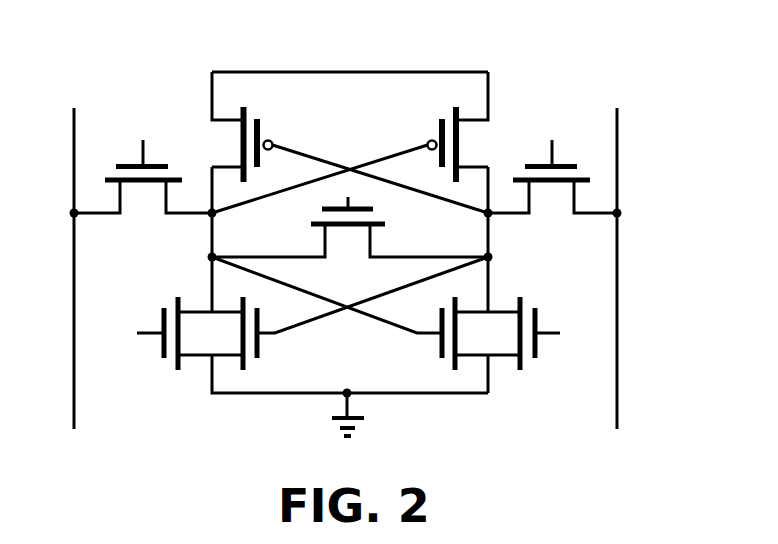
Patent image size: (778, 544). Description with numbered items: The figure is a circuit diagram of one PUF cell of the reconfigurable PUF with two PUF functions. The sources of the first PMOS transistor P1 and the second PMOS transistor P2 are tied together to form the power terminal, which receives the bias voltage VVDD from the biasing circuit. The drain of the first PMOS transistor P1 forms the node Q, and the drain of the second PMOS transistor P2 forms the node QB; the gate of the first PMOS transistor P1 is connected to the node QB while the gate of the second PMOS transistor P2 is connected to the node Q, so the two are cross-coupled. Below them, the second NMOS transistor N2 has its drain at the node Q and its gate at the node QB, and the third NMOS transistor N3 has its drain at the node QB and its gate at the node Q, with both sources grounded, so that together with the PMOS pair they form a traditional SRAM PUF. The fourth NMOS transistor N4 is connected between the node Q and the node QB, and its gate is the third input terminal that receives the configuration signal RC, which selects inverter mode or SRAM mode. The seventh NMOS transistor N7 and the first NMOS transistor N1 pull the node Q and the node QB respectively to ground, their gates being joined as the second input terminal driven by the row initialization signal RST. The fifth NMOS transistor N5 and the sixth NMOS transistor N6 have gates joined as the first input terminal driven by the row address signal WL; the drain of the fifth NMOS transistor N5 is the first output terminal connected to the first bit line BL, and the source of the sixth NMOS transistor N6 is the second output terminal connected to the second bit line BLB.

The bias voltage VVDD is at (350, 58).
The first bit line BL is at (73, 258).
The second bit line BLB is at (616, 258).
The row address signal WL is at (345, 143).
The fifth NMOS transistor N5 is at (143, 190).
The sixth NMOS transistor N6 is at (552, 190).
The first PMOS transistor P1 is at (351, 160).
The second PMOS transistor P2 is at (350, 160).
The node Q is at (202, 235).
The node QB is at (503, 235).
The binary configuration signal RC is at (347, 193).
The fourth NMOS transistor N4 is at (350, 233).
The row initialization signal RST is at (348, 332).
The seventh NMOS transistor N7 is at (187, 324).
The second NMOS transistor N2 is at (350, 313).
The third NMOS transistor N3 is at (350, 313).
The first NMOS transistor N1 is at (511, 324).